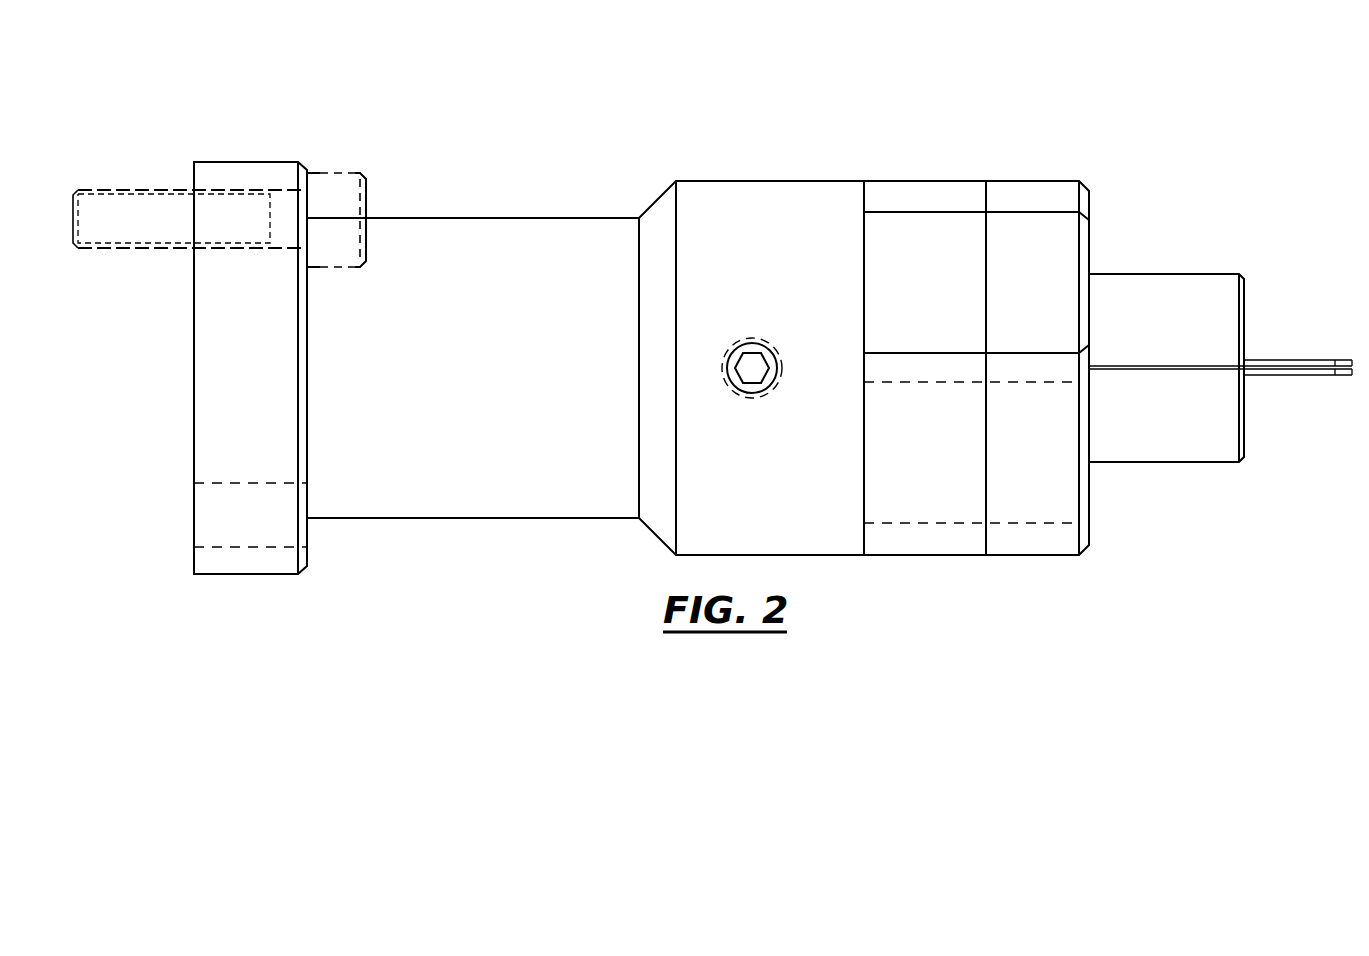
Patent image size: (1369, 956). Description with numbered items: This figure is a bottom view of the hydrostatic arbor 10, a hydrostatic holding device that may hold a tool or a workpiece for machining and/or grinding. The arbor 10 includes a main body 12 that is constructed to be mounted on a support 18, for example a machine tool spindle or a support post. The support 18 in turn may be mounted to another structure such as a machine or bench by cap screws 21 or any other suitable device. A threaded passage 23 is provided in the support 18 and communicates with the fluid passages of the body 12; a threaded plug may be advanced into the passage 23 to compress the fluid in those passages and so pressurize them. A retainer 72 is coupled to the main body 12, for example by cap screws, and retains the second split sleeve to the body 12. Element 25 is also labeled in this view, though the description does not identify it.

The hydrostatic arbor 10 is at (1186, 160).
The main body 12 is at (919, 172).
The support 18 is at (479, 204).
The cap screws 21 is at (338, 157).
The threaded passage 23 is at (768, 382).
The hex socket 25 is at (740, 382).
The retainer 72 is at (1015, 172).